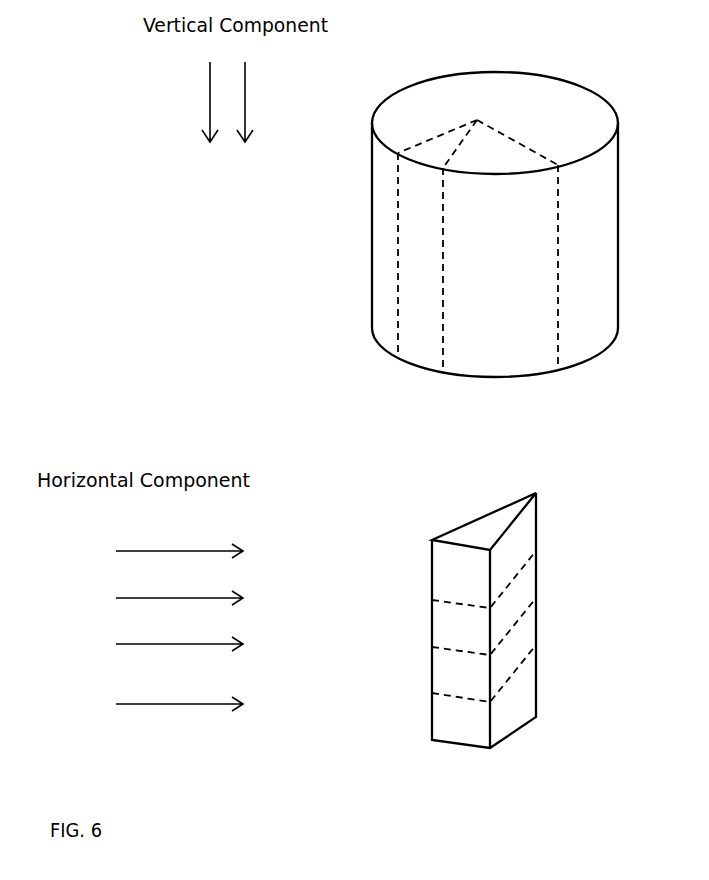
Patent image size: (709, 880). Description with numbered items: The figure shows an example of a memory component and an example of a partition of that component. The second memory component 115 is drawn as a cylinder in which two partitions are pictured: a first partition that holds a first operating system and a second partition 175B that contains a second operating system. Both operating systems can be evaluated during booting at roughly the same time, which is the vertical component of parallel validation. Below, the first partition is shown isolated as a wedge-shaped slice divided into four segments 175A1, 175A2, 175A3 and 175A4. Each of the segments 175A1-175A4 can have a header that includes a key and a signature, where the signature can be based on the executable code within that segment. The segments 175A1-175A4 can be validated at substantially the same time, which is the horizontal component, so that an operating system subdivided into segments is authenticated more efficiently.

The second memory component 115 is at (598, 95).
The partition 175B is at (490, 143).
The segment 175A1 is at (442, 576).
The segment 175A2 is at (442, 633).
The segment 175A3 is at (442, 682).
The segment 175A4 is at (442, 727).